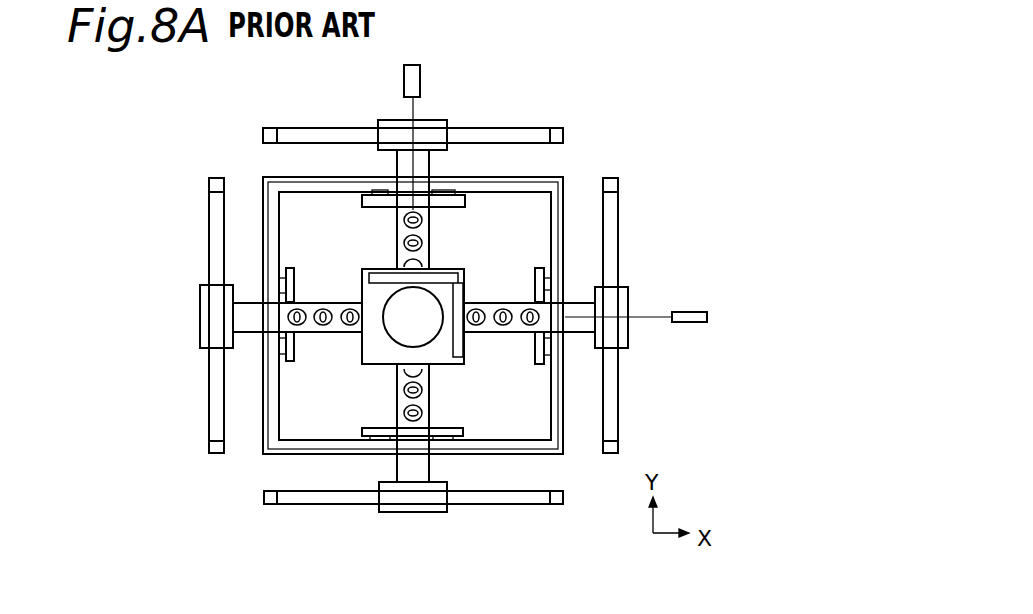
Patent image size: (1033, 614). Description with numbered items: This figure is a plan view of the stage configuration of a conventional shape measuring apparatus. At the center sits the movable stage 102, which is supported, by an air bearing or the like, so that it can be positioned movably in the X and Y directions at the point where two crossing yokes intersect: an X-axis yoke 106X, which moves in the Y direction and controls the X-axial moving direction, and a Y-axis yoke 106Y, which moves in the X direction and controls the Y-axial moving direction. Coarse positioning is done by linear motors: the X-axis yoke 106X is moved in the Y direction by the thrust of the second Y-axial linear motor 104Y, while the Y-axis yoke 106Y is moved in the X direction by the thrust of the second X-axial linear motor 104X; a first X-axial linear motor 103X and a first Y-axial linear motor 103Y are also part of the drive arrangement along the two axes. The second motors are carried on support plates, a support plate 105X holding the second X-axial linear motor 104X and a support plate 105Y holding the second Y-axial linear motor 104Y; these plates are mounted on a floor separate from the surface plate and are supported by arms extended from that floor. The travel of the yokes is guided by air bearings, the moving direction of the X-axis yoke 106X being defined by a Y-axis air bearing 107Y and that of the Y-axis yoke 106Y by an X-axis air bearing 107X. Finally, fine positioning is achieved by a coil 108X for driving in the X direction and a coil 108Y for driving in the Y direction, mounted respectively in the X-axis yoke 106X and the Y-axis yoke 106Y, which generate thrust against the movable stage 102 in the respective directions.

The movable stage 102 is at (377, 340).
The first X-axial linear motor 103X is at (505, 307).
The first Y-axial linear motor 103Y is at (400, 412).
The second X-axial linear motor 104X is at (427, 130).
The second Y-axial linear motor 104Y is at (215, 307).
The support plate 105X is at (268, 128).
The support plate 105Y is at (209, 183).
The X-axis yoke 106X is at (580, 312).
The Y-axis yoke 106Y is at (403, 245).
The X-axis air bearing 107X is at (462, 207).
The Y-axis air bearing 107Y is at (283, 345).
The coil for driving in the X-direction 108X is at (540, 316).
The coil for driving in the Y-direction 108Y is at (288, 318).